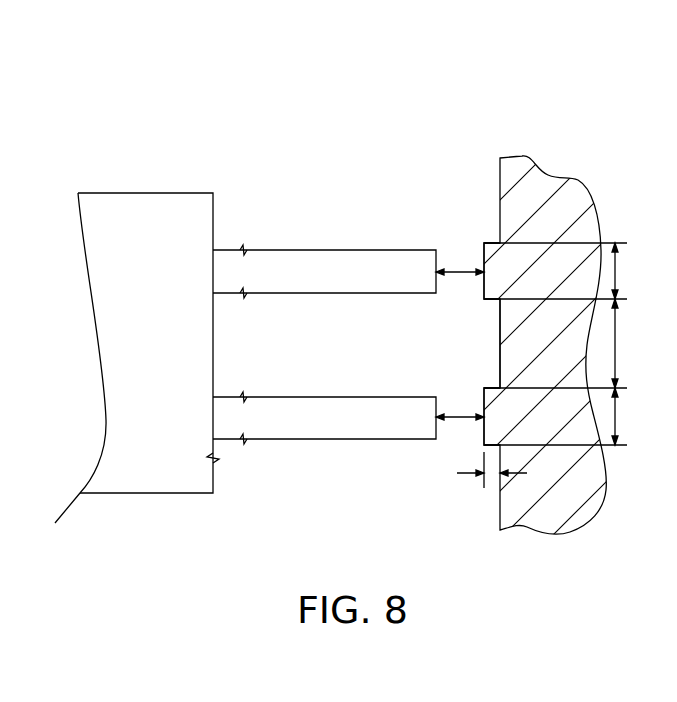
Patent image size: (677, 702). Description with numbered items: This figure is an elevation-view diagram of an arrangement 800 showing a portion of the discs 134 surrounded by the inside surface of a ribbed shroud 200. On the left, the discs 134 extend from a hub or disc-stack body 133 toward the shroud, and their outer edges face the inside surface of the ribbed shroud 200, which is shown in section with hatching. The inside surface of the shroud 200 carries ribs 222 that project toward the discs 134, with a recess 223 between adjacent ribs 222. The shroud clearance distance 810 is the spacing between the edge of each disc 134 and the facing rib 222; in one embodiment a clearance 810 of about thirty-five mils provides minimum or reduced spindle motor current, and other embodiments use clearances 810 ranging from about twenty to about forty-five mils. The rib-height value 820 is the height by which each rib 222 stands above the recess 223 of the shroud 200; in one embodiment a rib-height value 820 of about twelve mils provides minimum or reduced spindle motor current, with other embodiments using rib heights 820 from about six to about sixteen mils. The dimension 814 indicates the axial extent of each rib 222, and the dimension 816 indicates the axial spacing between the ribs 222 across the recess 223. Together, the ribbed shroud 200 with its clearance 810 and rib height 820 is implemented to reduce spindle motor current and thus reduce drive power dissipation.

The interface arrangement 800 is at (578, 114).
The connector body 133 is at (87, 176).
The discs 134 is at (297, 294).
The ribbed shroud 200 is at (524, 158).
The projections 222 is at (484, 297).
The recess between projections 223 is at (500, 356).
The shroud clearance distance 810 is at (458, 268).
The projection height 814 is at (618, 273).
The projection spacing 816 is at (618, 356).
The rib-height value 820 is at (493, 476).